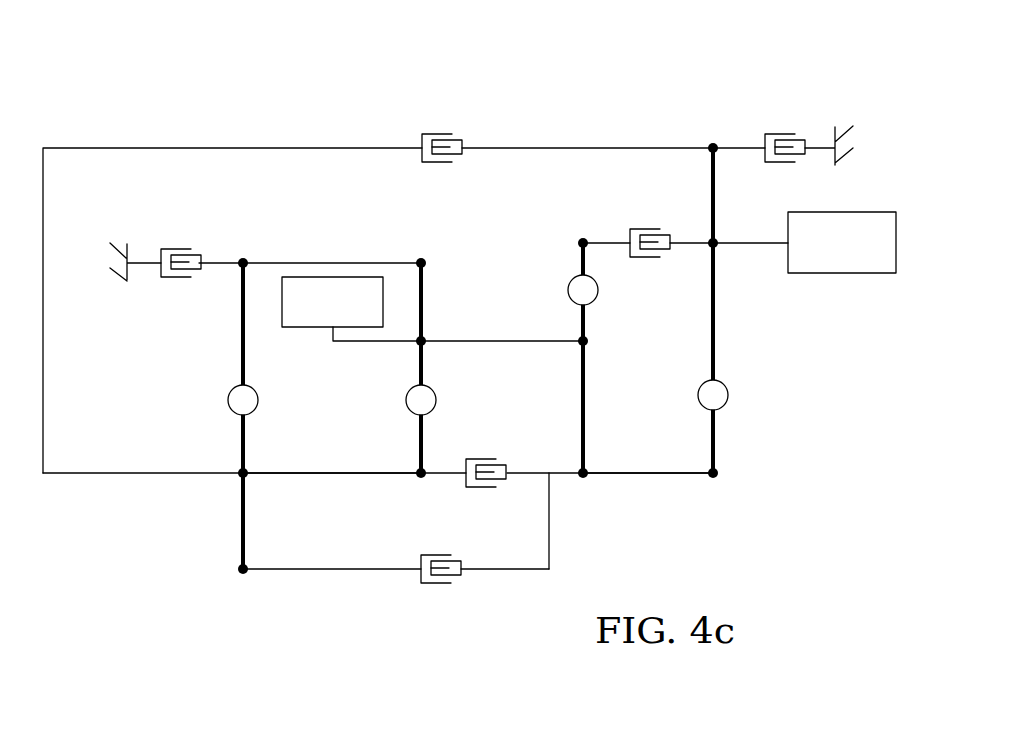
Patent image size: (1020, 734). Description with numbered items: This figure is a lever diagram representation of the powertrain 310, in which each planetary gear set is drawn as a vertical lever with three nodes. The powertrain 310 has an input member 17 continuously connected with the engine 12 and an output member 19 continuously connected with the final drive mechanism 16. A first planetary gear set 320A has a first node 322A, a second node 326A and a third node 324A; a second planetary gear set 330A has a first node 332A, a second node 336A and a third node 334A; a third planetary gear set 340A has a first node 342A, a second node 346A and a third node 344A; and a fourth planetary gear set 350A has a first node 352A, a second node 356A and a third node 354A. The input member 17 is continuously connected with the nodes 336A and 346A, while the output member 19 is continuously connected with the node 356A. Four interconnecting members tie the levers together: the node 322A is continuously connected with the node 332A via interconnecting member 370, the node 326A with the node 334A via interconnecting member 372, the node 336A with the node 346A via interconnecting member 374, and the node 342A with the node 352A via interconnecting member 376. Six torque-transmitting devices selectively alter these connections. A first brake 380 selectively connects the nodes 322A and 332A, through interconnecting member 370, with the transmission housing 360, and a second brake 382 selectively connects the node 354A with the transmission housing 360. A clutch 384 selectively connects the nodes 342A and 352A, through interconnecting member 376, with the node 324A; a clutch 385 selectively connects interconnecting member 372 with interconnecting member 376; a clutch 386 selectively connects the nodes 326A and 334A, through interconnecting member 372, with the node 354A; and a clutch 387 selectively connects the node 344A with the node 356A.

The powertrain 310 is at (524, 60).
The transmission housing 360 is at (113, 261).
The brake 380 is at (200, 248).
The brake 382 is at (804, 131).
The clutch 384 is at (458, 588).
The clutch 385 is at (502, 490).
The clutch 386 is at (461, 131).
The clutch 387 is at (666, 226).
The interconnecting member 370 is at (375, 261).
The interconnecting member 372 is at (333, 475).
The interconnecting member 374 is at (525, 343).
The interconnecting member 376 is at (655, 475).
The engine 12 is at (293, 336).
The input member 17 is at (388, 344).
The final drive mechanism 16 is at (840, 281).
The output member 19 is at (760, 246).
The first planetary gear set 320A is at (243, 585).
The second planetary gear set 330A is at (421, 488).
The third planetary gear set 340A is at (583, 488).
The fourth planetary gear set 350A is at (713, 490).
The first node 322A is at (246, 260).
The third node 324A is at (246, 567).
The second node 326A is at (246, 470).
The first node 332A is at (424, 260).
The third node 334A is at (418, 469).
The second node 336A is at (424, 339).
The first node 342A is at (586, 470).
The third node 344A is at (581, 240).
The second node 346A is at (586, 339).
The first node 352A is at (716, 472).
The third node 354A is at (711, 145).
The second node 356A is at (716, 240).